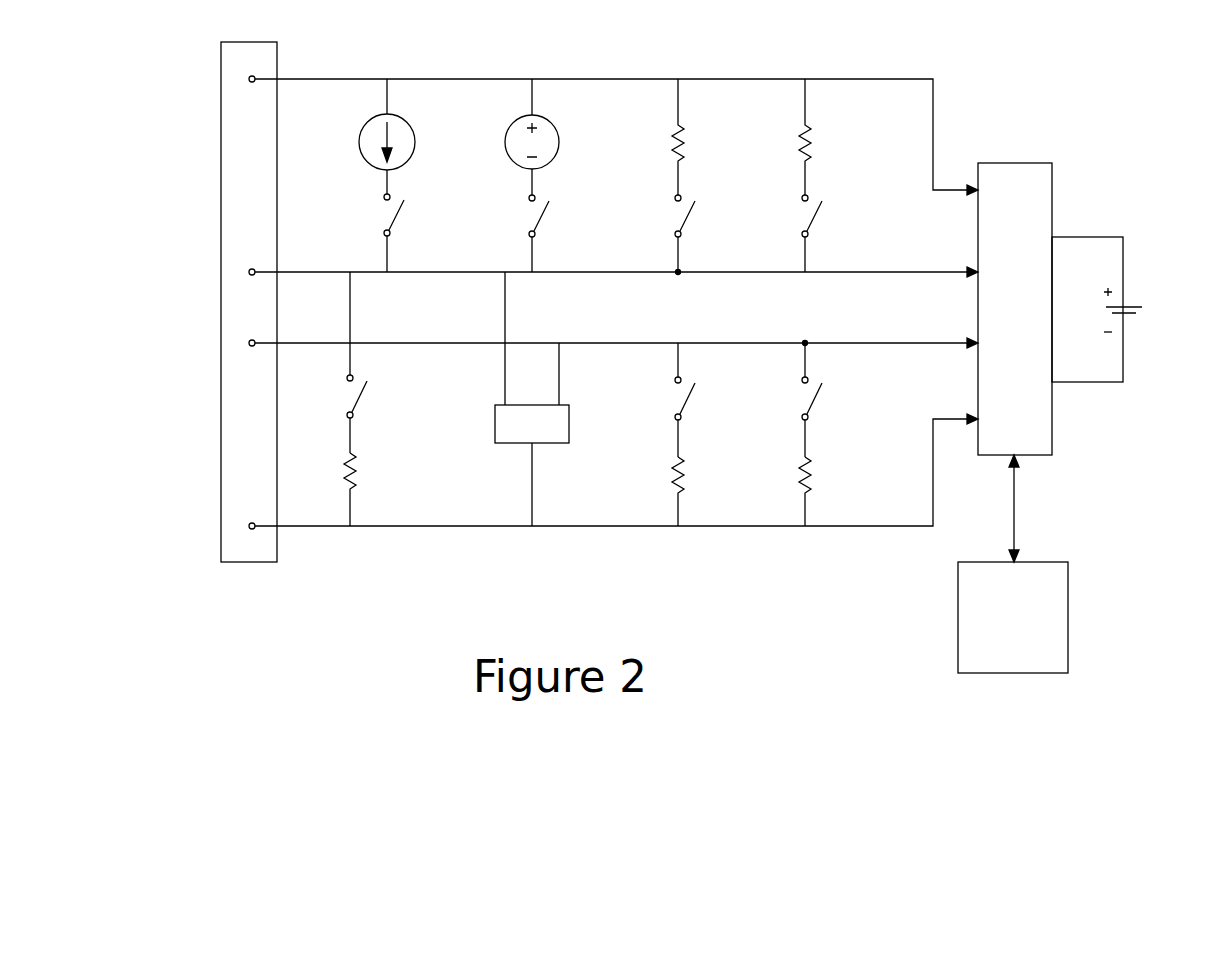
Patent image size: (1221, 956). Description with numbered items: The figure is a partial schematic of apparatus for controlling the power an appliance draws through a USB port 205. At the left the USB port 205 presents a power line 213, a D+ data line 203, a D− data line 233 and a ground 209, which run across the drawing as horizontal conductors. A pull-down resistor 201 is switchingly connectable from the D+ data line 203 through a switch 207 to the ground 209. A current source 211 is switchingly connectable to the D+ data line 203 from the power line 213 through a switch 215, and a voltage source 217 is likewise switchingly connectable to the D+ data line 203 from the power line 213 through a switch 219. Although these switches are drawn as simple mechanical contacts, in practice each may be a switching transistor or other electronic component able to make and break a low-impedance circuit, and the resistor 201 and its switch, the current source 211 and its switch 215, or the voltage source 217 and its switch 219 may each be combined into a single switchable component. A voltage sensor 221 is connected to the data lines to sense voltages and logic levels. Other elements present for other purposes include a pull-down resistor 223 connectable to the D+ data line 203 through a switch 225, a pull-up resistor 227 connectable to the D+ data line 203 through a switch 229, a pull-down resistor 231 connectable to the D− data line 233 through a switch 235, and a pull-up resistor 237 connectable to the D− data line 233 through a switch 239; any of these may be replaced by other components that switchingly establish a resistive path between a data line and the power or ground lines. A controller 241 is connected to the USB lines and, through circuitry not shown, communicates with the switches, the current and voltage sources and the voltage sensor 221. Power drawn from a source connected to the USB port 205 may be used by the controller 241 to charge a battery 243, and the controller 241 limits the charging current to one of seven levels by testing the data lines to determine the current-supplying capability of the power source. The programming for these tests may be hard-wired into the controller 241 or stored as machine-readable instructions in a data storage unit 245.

The pull-down resistor 201 is at (358, 462).
The D+ data line 203 is at (360, 393).
The USB port 205 is at (568, 274).
The switch 207 is at (268, 42).
The ground 209 is at (577, 528).
The current source 211 is at (403, 164).
The power line 213 is at (570, 78).
The switch 215 is at (398, 212).
The voltage source 217 is at (553, 160).
The switch 219 is at (543, 213).
The voltage sensor 221 is at (569, 414).
The pull-down resistor 223 is at (686, 465).
The switch 225 is at (690, 395).
The pull-up resistor 227 is at (686, 133).
The switch 229 is at (689, 213).
The pull-down resistor 231 is at (813, 465).
The D− data line 233 is at (413, 342).
The switch 235 is at (817, 395).
The pull-up resistor 237 is at (813, 135).
The switch 239 is at (816, 213).
The controller 241 is at (1052, 178).
The battery 243 is at (1134, 300).
The data storage unit 245 is at (1068, 590).